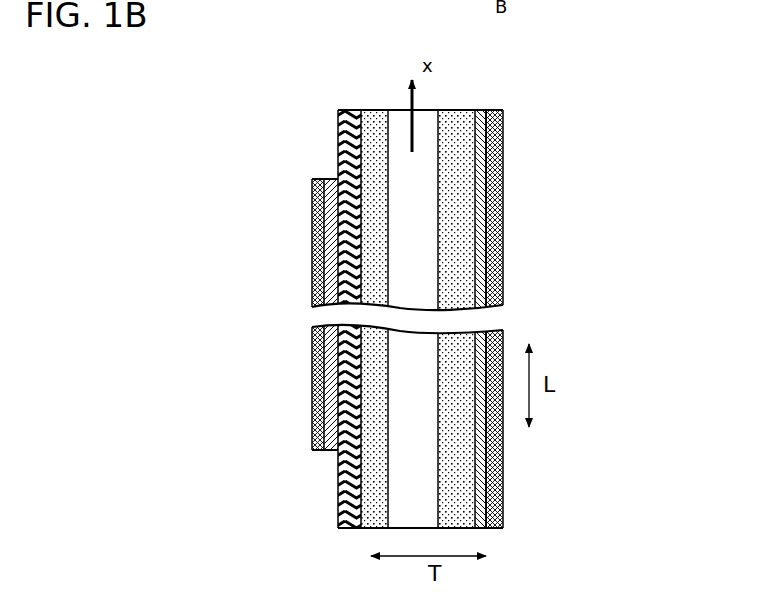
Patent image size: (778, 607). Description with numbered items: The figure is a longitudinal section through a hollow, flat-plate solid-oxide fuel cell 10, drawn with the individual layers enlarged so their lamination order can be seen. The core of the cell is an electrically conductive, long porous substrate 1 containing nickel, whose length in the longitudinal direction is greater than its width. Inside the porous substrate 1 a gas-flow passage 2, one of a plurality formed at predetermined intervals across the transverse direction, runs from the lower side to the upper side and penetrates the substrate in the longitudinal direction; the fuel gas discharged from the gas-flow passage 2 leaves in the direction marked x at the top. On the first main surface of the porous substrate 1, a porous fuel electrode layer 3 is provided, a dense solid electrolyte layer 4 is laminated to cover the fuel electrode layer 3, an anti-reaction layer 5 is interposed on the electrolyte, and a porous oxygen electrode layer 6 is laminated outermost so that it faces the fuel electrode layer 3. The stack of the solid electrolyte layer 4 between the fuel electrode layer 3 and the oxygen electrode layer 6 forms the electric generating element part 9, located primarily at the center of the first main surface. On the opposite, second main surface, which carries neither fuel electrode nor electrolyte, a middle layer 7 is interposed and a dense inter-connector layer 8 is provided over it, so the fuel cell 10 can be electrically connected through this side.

The porous substrate 1 is at (449, 123).
The gas-flow passage 2 is at (387, 129).
The fuel electrode layer 3 is at (355, 110).
The solid electrolyte layer 4 is at (343, 110).
The anti-reaction layer 5 is at (329, 178).
The oxygen electrode layer 6 is at (314, 178).
The middle layer 7 is at (484, 248).
The inter-connector layer 8 is at (494, 127).
The electric generating element part 9 is at (304, 270).
The fuel cell 10 is at (504, 215).